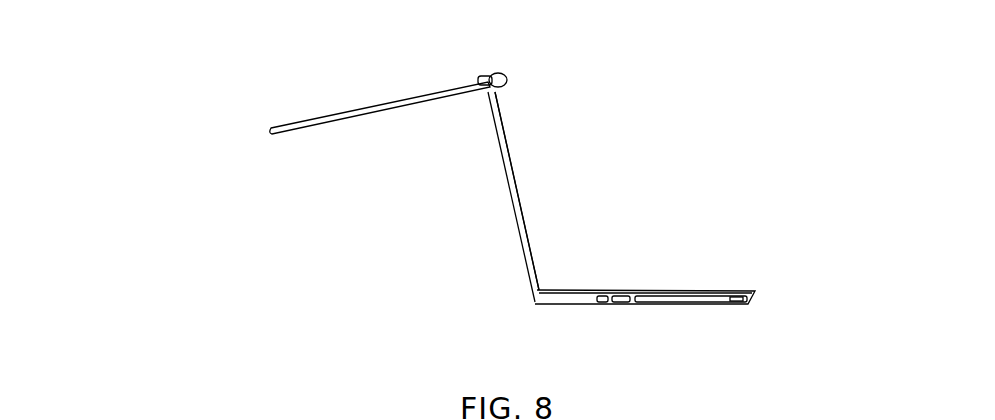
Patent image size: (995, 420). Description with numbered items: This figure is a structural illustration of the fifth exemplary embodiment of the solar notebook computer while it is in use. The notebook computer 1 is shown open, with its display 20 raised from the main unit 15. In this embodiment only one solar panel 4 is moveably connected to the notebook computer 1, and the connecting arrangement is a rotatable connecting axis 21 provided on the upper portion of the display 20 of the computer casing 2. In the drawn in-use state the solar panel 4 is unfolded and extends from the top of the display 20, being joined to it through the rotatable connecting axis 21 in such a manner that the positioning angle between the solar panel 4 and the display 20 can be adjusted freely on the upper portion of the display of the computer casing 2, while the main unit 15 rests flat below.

The notebook computer 1 is at (510, 288).
The computer casing 2 is at (495, 195).
The solar panel 4 is at (332, 105).
The main unit 15 is at (683, 283).
The display 20 is at (532, 225).
The rotatable connecting axis 21 is at (482, 72).